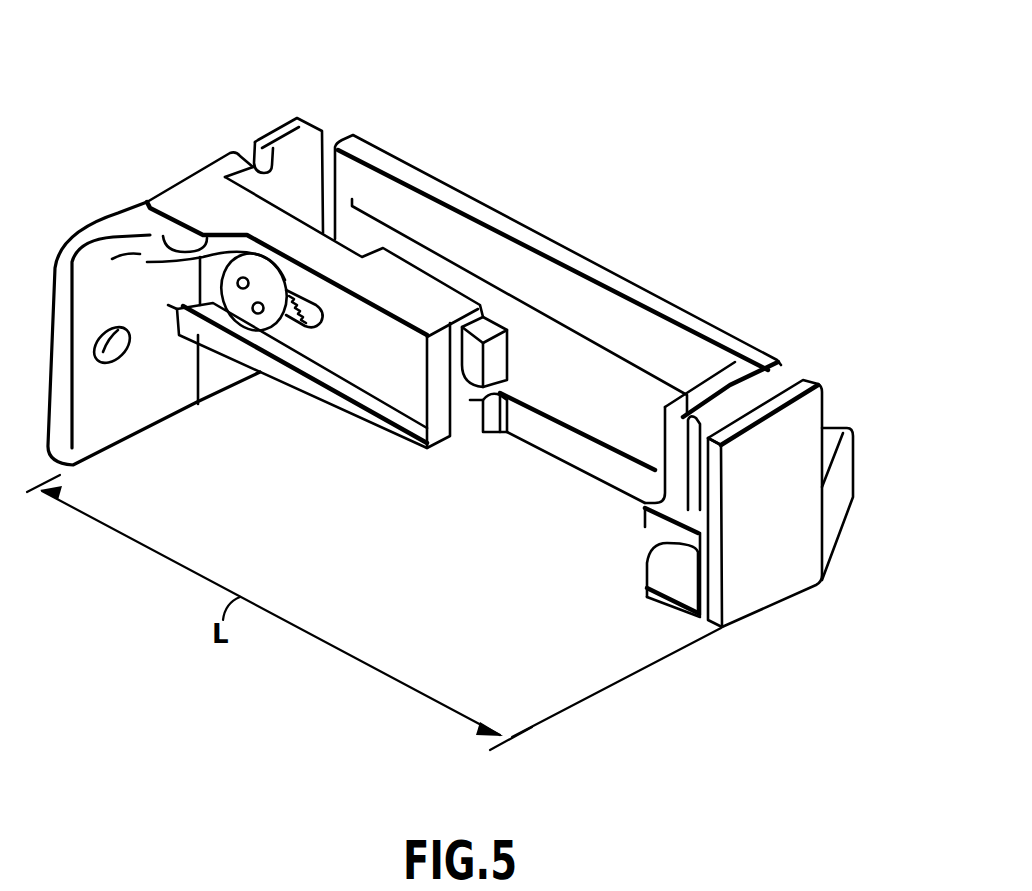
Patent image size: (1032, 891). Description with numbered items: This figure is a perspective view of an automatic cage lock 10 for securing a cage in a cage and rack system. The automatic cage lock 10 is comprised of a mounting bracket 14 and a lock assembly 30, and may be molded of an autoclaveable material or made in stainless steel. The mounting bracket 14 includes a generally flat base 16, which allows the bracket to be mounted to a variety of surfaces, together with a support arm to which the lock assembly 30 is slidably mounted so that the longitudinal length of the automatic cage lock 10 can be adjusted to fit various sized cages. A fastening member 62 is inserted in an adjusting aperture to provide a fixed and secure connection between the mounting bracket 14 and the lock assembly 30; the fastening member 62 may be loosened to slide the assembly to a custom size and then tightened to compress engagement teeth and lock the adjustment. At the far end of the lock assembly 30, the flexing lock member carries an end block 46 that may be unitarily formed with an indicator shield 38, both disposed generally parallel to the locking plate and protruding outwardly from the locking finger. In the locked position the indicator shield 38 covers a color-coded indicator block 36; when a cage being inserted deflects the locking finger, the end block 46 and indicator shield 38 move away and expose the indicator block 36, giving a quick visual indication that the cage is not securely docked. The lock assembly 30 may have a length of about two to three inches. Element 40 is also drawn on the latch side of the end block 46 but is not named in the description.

The automatic cage lock 10 is at (450, 60).
The mounting bracket 14 is at (193, 197).
The base 16 is at (118, 400).
The lock assembly 30 is at (590, 390).
The indicator block 36 is at (743, 387).
The indicator shield 38 is at (783, 450).
The latch 40 is at (840, 490).
The end block 46 is at (757, 557).
The fastening member 62 is at (250, 292).